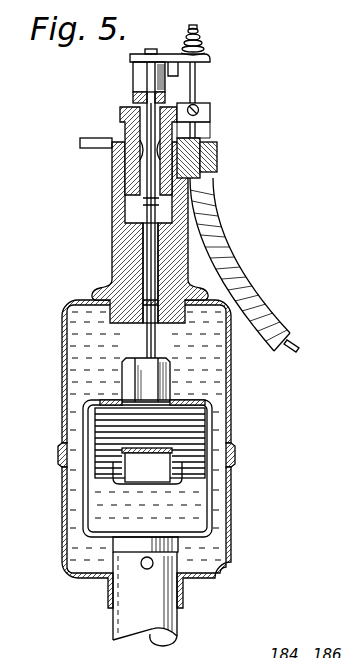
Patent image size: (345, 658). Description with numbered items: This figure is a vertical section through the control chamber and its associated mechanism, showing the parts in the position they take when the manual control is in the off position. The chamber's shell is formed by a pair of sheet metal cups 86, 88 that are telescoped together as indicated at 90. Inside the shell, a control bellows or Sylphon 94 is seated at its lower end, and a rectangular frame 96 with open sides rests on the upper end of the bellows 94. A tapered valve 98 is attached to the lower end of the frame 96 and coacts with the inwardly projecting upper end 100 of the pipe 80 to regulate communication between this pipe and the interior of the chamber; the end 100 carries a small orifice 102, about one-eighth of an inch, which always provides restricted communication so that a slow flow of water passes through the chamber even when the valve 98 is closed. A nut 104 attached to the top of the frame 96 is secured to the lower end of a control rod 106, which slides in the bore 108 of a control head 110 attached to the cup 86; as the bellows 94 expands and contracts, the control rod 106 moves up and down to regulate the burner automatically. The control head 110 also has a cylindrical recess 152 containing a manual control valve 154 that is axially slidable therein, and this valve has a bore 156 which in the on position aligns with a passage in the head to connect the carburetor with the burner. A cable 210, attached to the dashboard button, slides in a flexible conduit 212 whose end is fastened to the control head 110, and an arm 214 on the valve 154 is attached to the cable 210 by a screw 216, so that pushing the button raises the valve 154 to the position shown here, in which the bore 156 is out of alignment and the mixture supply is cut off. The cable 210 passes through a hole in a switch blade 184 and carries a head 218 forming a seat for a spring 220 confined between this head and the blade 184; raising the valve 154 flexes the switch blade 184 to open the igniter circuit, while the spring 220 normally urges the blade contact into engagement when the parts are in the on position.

The pipe 80 is at (166, 629).
The sheet metal cup 86 is at (63, 393).
The sheet metal cup 88 is at (63, 531).
The telescoped joint 90 is at (58, 460).
The control bellows 94 is at (195, 440).
The rectangular frame 96 is at (210, 498).
The tapered valve 98 is at (178, 547).
The upper end of pipe 100 is at (185, 582).
The orifice 102 is at (152, 568).
The nut 104 is at (170, 388).
The control rod 106 is at (156, 346).
The bore 108 is at (133, 255).
The control head 110 is at (115, 268).
The cylindrical recess 152 is at (163, 210).
The manual control valve 154 is at (120, 110).
The bore 156 is at (185, 164).
The switch blade 184 is at (212, 61).
The cable 210 is at (292, 342).
The flexible conduit 212 is at (232, 272).
The arm 214 is at (212, 115).
The screw 216 is at (200, 106).
The head 218 is at (199, 23).
The spring 220 is at (207, 40).